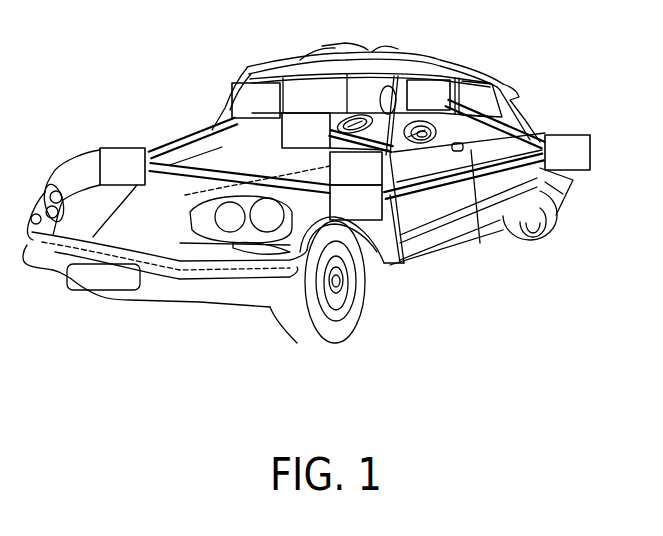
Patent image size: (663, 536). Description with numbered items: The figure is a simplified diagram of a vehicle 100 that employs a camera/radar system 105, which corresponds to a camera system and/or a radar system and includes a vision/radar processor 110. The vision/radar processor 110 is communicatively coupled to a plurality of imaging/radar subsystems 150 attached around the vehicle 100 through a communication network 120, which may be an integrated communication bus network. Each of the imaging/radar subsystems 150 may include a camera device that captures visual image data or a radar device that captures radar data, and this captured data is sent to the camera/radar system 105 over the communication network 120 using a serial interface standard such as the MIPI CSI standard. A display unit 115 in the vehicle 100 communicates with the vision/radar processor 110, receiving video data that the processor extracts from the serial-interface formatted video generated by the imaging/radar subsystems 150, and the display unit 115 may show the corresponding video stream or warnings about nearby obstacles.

The vehicle 100 is at (198, 82).
The camera/radar system 105 is at (340, 179).
The vision/radar processor 110 is at (340, 212).
The display unit 115 is at (291, 140).
The communication network 120 is at (153, 147).
The imaging/radar subsystems 150 is at (107, 176).